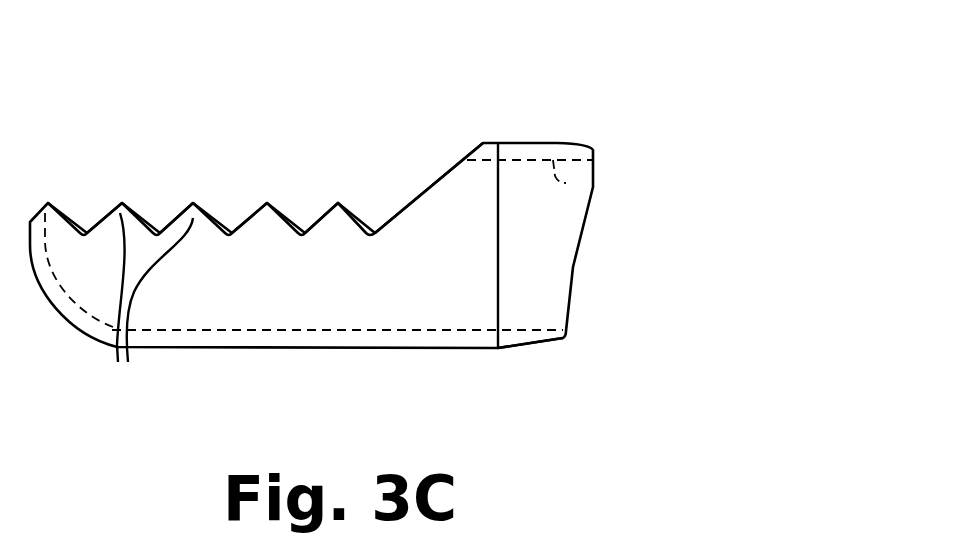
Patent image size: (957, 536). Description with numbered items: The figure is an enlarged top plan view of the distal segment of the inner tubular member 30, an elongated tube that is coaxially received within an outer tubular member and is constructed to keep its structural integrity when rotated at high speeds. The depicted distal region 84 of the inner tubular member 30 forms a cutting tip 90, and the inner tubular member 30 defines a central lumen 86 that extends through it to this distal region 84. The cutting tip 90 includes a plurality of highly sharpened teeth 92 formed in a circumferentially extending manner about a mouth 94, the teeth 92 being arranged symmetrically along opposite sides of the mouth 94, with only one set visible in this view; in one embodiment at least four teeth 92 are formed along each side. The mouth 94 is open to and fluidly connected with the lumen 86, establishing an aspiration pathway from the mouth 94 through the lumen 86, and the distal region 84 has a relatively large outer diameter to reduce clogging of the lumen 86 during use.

The inner tubular member 30 is at (631, 54).
The distal region 84 is at (531, 356).
The central lumen 86 is at (566, 183).
The cutting tip 90 is at (207, 172).
The teeth 92 is at (151, 319).
The mouth 94 is at (415, 202).